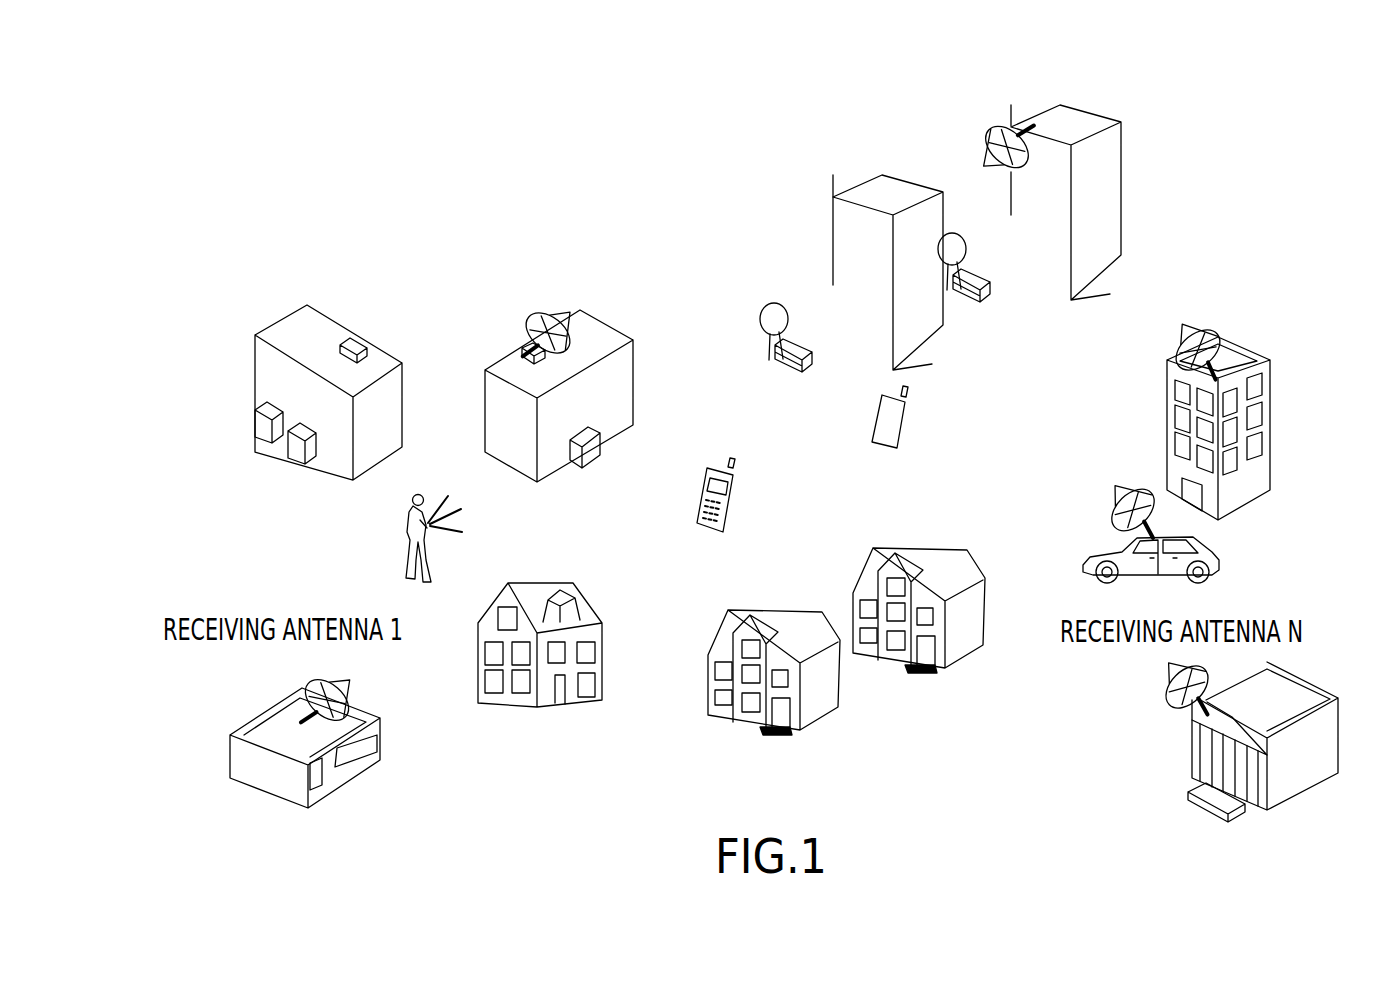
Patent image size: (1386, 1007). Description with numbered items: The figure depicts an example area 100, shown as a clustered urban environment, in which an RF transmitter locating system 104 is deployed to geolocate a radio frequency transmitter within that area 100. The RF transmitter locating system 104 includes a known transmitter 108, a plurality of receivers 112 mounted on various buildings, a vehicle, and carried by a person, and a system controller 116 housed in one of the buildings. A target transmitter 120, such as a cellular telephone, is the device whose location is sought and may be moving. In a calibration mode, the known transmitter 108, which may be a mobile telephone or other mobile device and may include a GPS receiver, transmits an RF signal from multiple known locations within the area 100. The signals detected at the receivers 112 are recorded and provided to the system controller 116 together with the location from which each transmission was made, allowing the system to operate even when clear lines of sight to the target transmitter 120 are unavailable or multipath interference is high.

The area 100 is at (612, 50).
The RF transmitter locating system 104 is at (522, 233).
The known transmitter 108 is at (900, 425).
The receiver 112 is at (530, 318).
The system controller 116 is at (258, 421).
The target transmitter 120 is at (733, 487).